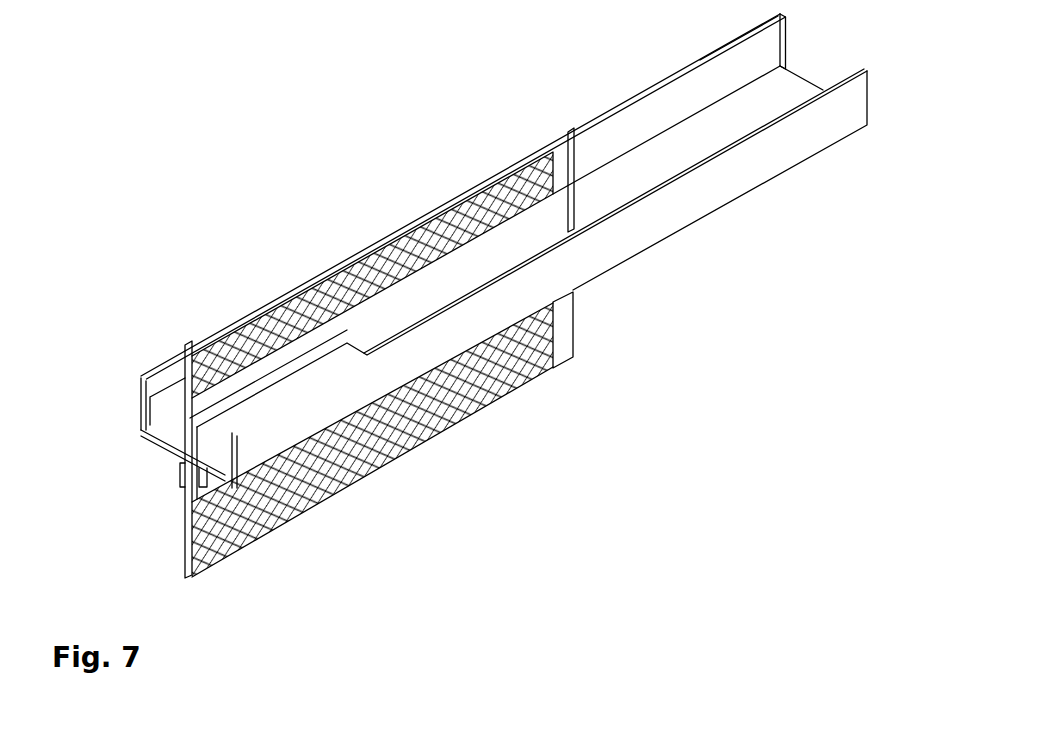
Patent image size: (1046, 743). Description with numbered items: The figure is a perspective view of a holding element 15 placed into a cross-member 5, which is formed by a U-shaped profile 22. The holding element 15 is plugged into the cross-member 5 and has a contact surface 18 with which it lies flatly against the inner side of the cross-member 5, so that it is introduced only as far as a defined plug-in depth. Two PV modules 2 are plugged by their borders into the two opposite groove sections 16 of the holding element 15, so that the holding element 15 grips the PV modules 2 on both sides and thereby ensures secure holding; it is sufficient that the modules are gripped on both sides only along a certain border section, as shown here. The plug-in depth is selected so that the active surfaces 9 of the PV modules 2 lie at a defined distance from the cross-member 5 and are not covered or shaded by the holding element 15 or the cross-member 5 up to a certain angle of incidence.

The PV module 2 is at (569, 150).
The cross-member 5 is at (685, 211).
The active surface 9 is at (410, 240).
The holding element 15 is at (173, 423).
The groove section 16 is at (200, 441).
The contact surface 18 is at (172, 438).
The U-shaped profile 22 is at (752, 165).